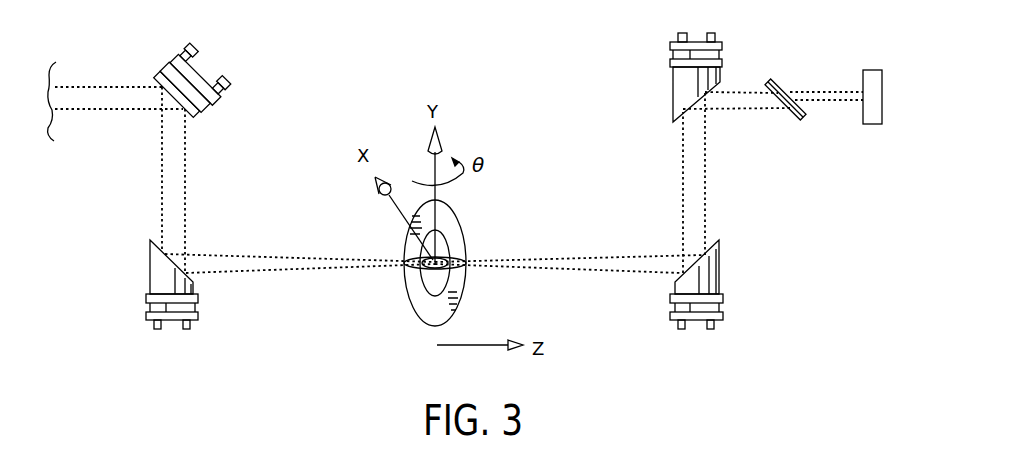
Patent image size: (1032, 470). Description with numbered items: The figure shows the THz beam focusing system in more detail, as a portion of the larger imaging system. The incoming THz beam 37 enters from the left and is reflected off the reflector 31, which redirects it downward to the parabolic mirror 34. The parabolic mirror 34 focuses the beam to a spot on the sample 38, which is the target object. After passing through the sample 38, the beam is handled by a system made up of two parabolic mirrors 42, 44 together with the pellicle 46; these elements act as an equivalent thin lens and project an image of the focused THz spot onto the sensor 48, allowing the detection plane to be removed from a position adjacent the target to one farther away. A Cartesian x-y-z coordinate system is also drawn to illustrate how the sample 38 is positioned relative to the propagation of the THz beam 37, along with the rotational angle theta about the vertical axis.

The reflector 31 is at (200, 68).
The parabolic mirror 34 is at (150, 263).
The incoming THz beam 37 is at (86, 91).
The sample 38 is at (462, 237).
The parabolic mirror 42 is at (720, 269).
The parabolic mirror 44 is at (673, 84).
The pellicle 46 is at (782, 90).
The sensor 48 is at (887, 103).